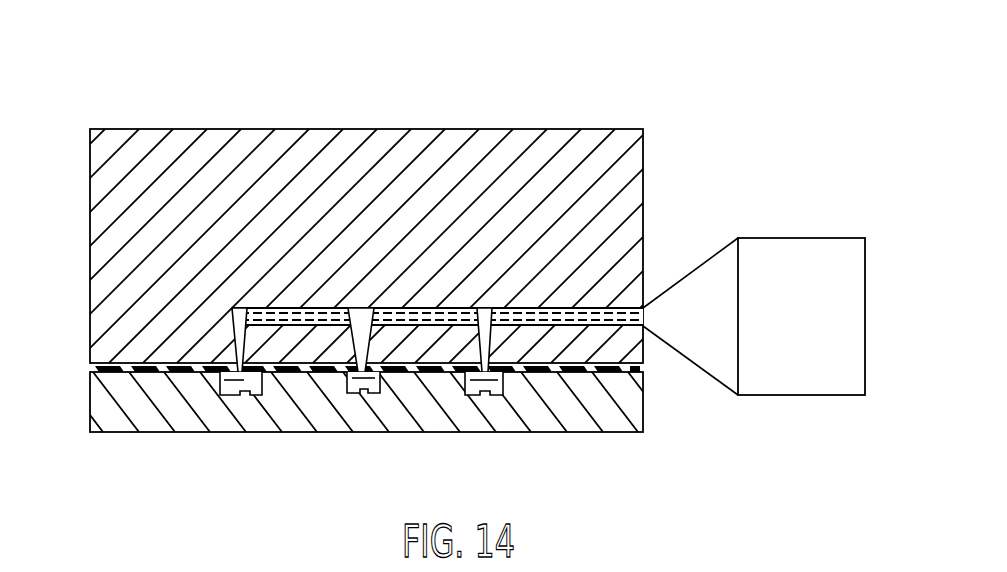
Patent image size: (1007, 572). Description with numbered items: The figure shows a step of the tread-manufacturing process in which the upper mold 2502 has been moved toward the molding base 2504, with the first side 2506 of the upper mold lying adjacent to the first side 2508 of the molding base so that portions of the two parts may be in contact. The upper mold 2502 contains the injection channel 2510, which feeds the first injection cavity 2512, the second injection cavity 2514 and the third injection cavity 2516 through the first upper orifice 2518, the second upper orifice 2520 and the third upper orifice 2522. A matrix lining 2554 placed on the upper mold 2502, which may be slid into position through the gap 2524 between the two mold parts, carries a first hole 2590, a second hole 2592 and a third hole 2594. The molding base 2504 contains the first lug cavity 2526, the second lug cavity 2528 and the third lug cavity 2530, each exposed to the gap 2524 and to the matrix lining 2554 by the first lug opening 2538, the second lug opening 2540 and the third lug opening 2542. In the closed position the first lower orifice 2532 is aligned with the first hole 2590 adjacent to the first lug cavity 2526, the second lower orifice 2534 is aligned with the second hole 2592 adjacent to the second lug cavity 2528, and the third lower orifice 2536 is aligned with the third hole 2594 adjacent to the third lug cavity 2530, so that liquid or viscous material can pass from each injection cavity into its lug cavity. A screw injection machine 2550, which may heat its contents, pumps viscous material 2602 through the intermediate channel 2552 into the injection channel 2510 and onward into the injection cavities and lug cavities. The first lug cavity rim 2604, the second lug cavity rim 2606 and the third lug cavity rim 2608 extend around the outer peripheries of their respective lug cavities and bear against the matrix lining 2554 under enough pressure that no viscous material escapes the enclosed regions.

The upper mold 2502 is at (100, 129).
The molding base 2504 is at (104, 433).
The first side of upper mold 2506 is at (123, 380).
The first side of molding base 2508 is at (104, 360).
The injection channel 2510 is at (643, 250).
The first injection cavity 2512 is at (230, 342).
The second injection cavity 2514 is at (367, 357).
The third injection cavity 2516 is at (465, 397).
The first upper orifice 2518 is at (230, 318).
The second upper orifice 2520 is at (360, 328).
The third upper orifice 2522 is at (503, 360).
The gap 2524 is at (647, 369).
The first lug cavity 2526 is at (222, 397).
The second lug cavity 2528 is at (357, 396).
The third lug cavity 2530 is at (537, 433).
The first lower orifice 2532 is at (238, 326).
The second lower orifice 2534 is at (420, 318).
The third lower orifice 2536 is at (585, 315).
The first lug opening 2538 is at (245, 400).
The second lug opening 2540 is at (344, 400).
The third lug opening 2542 is at (476, 396).
The screw injection machine 2550 is at (805, 245).
The intermediate channel 2552 is at (703, 281).
The matrix lining 2554 is at (578, 373).
The first hole 2590 is at (245, 370).
The second hole 2592 is at (368, 372).
The third hole 2594 is at (490, 375).
The viscous material 2602 is at (485, 328).
The first lug cavity rim 2604 is at (248, 308).
The second lug cavity rim 2606 is at (365, 396).
The third lug cavity rim 2608 is at (590, 308).